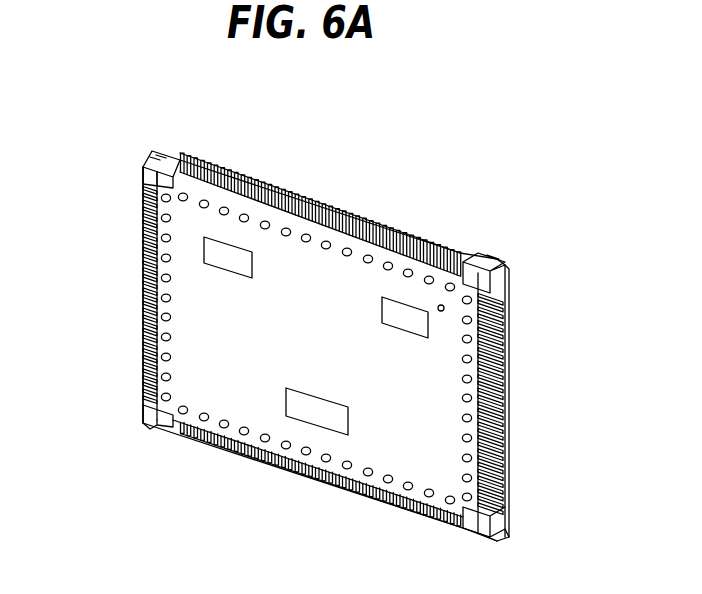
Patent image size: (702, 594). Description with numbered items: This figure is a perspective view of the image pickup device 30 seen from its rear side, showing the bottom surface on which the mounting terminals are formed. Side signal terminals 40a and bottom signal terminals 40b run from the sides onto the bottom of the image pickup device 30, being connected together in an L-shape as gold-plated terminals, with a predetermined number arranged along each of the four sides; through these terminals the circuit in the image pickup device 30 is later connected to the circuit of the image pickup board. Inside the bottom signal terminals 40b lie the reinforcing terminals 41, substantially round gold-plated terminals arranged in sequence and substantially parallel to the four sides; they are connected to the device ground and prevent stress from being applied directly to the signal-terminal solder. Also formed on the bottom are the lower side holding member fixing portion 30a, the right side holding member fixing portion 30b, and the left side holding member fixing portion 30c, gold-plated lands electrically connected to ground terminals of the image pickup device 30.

The image pickup device 30 is at (273, 126).
The lower side holding member fixing portion 30a is at (313, 407).
The right side holding member fixing portion 30b is at (403, 317).
The left side holding member fixing portion 30c is at (227, 257).
The side signal terminals 40a is at (293, 204).
The bottom signal terminals 40b is at (353, 238).
The reinforcing terminals 41 is at (162, 357).